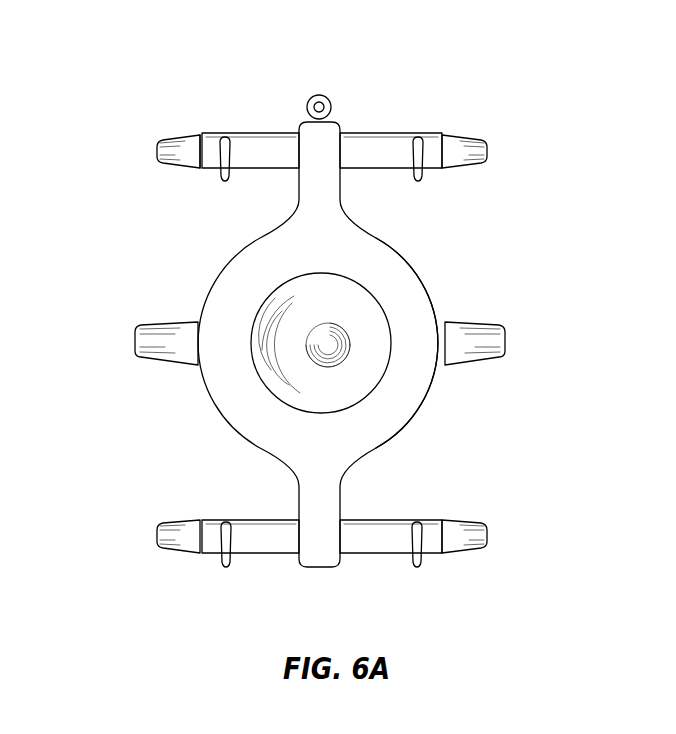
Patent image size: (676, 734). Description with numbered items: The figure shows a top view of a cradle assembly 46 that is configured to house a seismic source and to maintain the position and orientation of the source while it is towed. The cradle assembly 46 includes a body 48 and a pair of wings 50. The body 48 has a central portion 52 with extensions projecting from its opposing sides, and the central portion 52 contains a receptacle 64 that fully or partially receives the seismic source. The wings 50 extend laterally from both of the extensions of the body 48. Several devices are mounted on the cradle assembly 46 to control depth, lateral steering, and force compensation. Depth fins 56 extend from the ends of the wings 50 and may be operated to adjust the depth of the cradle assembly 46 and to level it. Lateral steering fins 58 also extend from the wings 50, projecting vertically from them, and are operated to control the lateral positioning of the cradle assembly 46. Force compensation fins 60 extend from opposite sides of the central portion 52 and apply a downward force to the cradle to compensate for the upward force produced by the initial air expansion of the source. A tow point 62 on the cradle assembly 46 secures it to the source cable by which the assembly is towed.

The cradle assembly 46 is at (314, 308).
The body 48 is at (237, 270).
The wings 50 is at (262, 132).
The central portion 52 is at (420, 273).
The depth fins 56 is at (162, 152).
The lateral steering fins 58 is at (232, 160).
The force compensation fins 60 is at (150, 352).
The tow point 62 is at (317, 94).
The receptacle 64 is at (300, 373).